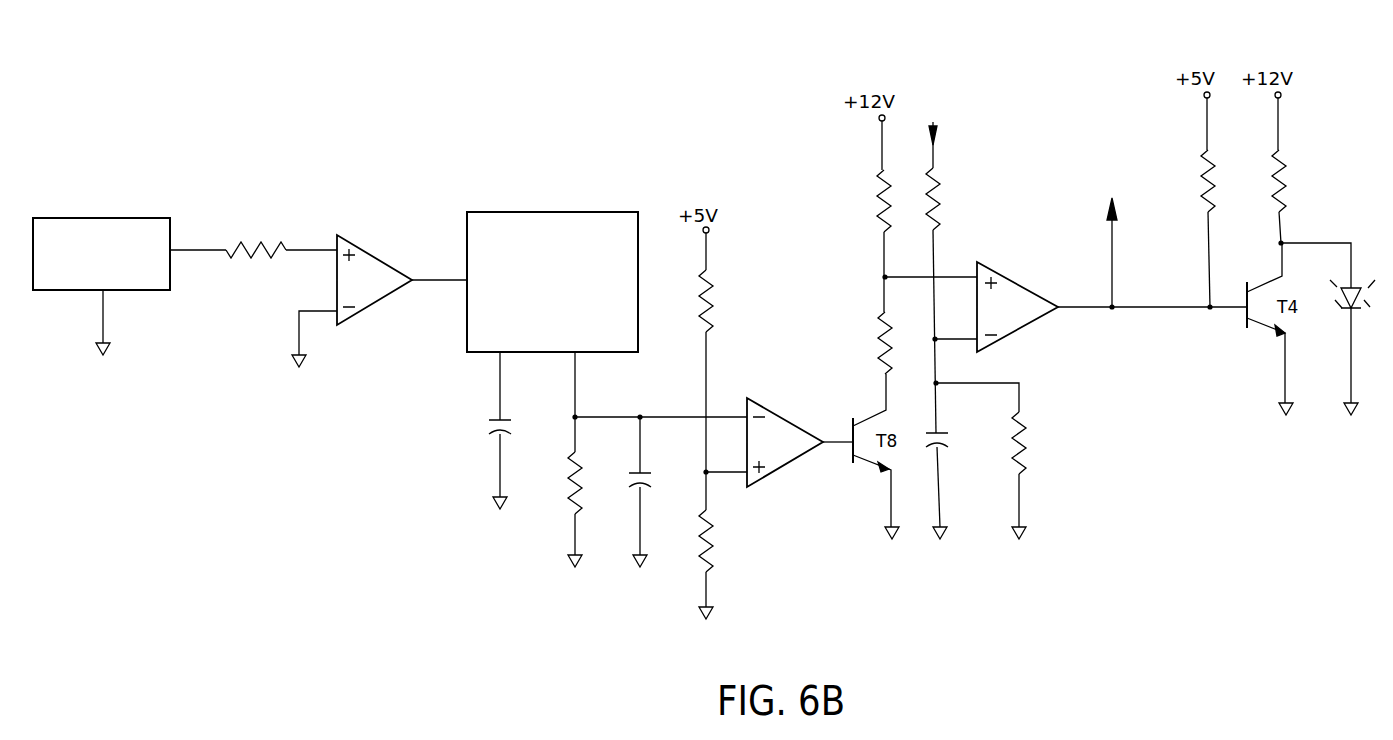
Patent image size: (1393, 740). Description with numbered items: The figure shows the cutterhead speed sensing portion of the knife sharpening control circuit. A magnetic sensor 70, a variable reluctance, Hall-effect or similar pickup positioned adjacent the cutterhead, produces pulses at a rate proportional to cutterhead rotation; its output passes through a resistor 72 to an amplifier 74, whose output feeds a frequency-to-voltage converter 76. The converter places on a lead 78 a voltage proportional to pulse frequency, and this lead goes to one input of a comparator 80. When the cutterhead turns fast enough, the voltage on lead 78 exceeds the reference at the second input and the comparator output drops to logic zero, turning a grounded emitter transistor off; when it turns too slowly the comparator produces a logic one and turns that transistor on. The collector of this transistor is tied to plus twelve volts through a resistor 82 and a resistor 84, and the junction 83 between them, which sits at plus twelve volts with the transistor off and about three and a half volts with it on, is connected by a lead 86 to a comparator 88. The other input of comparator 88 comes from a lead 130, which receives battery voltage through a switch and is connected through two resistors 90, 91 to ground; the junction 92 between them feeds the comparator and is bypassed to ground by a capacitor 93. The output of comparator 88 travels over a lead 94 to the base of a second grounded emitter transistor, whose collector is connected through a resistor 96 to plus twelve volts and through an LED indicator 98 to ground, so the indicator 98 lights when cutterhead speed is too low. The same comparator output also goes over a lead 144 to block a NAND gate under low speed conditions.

The magnetic sensor 70 is at (133, 218).
The resistor 72 is at (262, 240).
The amplifier 74 is at (383, 258).
The frequency-to-voltage converter 76 is at (563, 212).
The lead 78 is at (665, 417).
The comparator 80 is at (780, 418).
The 3.9K resistor 82 is at (880, 337).
The junction 83 is at (882, 277).
The 10K resistor 84 is at (880, 203).
The lead 86 is at (953, 277).
The comparator 88 is at (1023, 288).
The 10K resistor 90 is at (935, 208).
The 10K resistor 91 is at (1025, 445).
The junction 92 is at (941, 338).
The capacitor 93 is at (950, 437).
The lead 94 is at (1165, 309).
The resistor 96 is at (1285, 185).
The LED indicator 98 is at (1370, 293).
The lead 130 is at (933, 158).
The lead 144 is at (1112, 258).